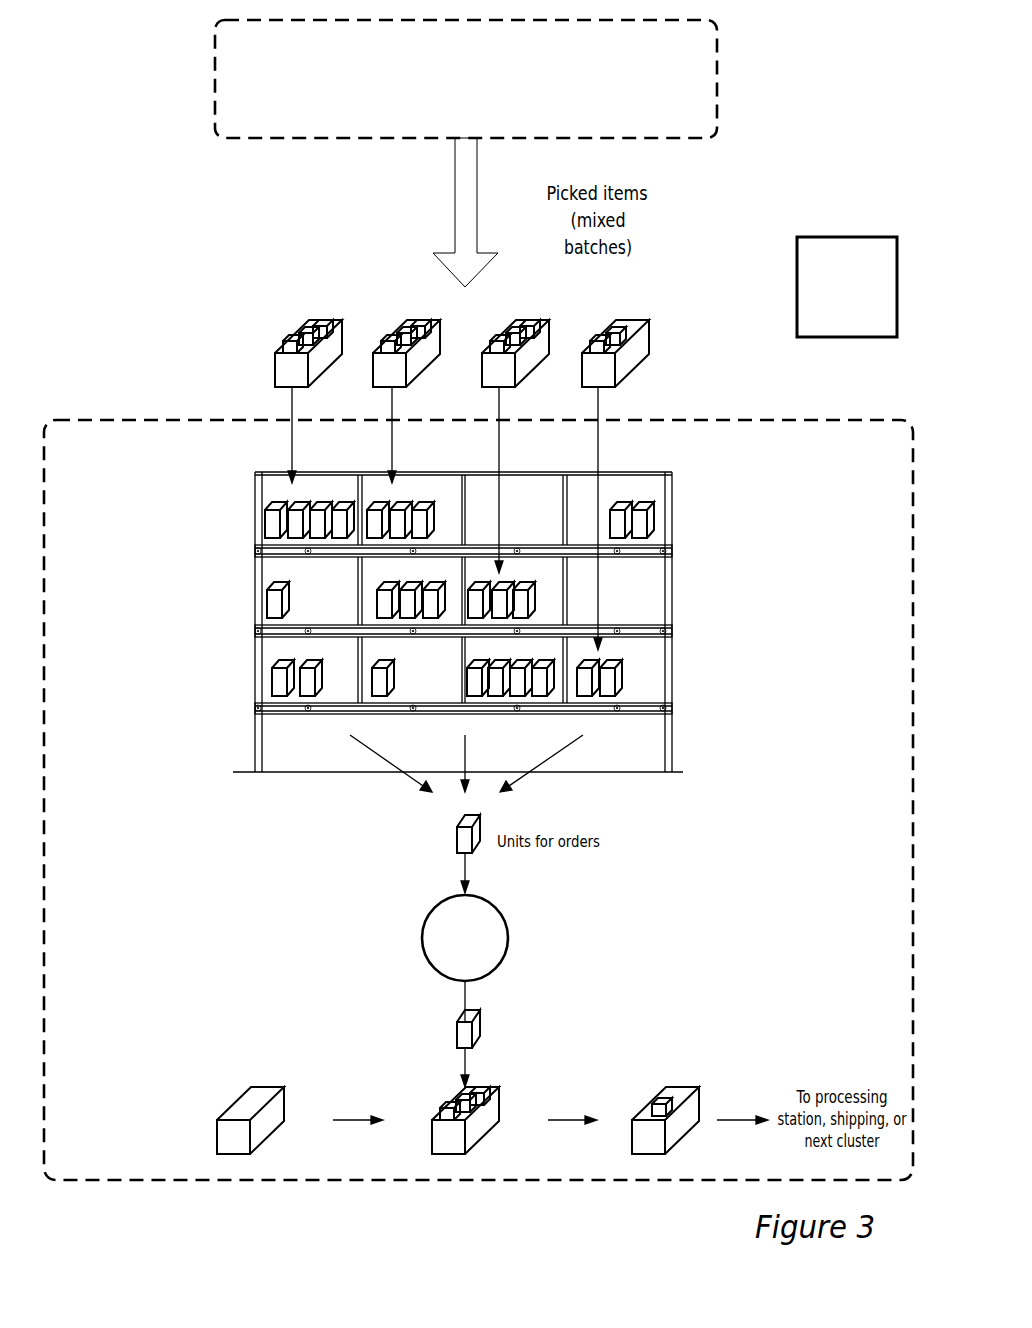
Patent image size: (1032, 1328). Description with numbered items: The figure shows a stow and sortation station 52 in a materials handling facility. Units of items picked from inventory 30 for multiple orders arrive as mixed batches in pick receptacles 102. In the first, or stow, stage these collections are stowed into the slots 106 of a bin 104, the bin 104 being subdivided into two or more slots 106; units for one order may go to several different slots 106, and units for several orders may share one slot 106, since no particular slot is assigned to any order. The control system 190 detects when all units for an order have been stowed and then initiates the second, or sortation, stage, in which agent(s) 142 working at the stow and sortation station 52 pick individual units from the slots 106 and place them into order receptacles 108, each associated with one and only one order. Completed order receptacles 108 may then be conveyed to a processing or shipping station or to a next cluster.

The inventory 30 is at (518, 90).
The control system 190 is at (832, 322).
The pick receptacles 102 is at (222, 353).
The stow and sortation station 52 is at (478, 800).
The bin 104 is at (242, 514).
The slots 106 is at (656, 493).
The agent(s) 142 is at (452, 957).
The order receptacles 108 is at (189, 1120).